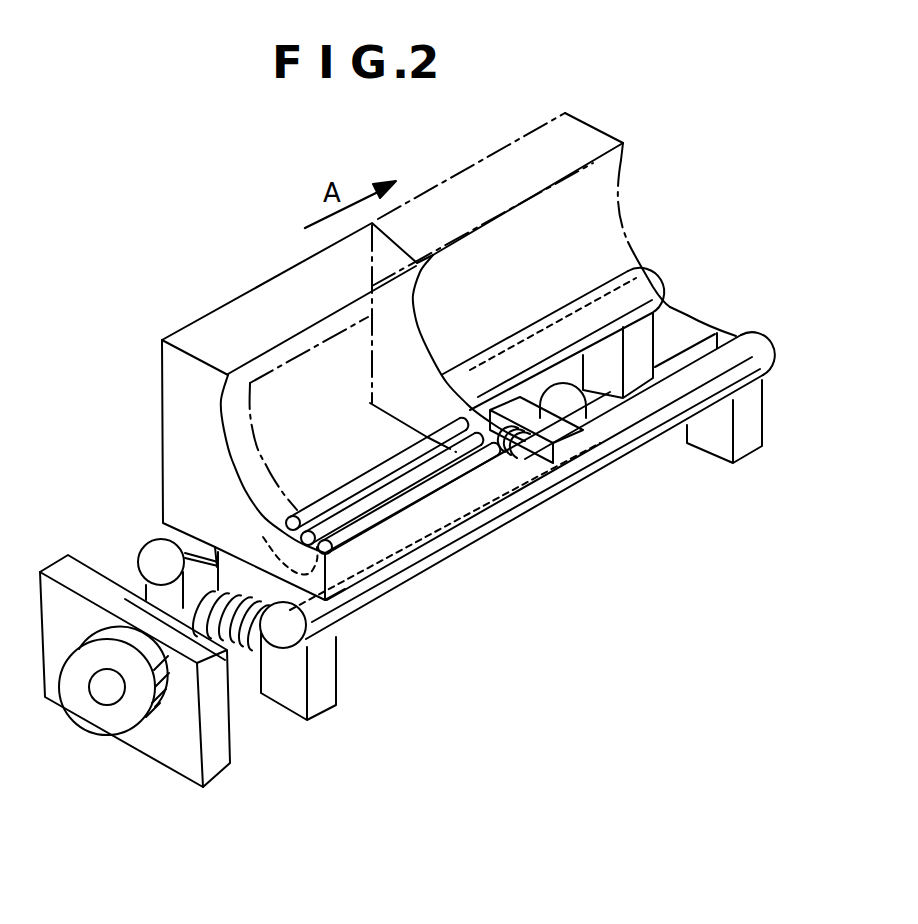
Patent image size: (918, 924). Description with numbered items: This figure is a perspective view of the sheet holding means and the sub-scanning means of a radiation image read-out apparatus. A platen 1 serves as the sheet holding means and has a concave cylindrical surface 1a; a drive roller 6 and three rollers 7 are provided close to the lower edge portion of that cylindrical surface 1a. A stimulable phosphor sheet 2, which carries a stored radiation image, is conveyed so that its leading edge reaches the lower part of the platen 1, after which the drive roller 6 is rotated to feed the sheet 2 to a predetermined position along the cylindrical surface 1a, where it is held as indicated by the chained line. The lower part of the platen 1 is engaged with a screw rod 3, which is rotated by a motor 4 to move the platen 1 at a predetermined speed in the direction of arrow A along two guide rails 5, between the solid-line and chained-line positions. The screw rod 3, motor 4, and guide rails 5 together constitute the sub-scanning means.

The platen 1 is at (213, 342).
The concave cylindrical surface 1a is at (238, 443).
The stimulable phosphor sheet 2 is at (284, 345).
The screw rod 3 is at (230, 633).
The motor 4 is at (110, 720).
The guide rails 5 is at (147, 555).
The drive roller 6 is at (291, 560).
The rollers 7 is at (405, 462).